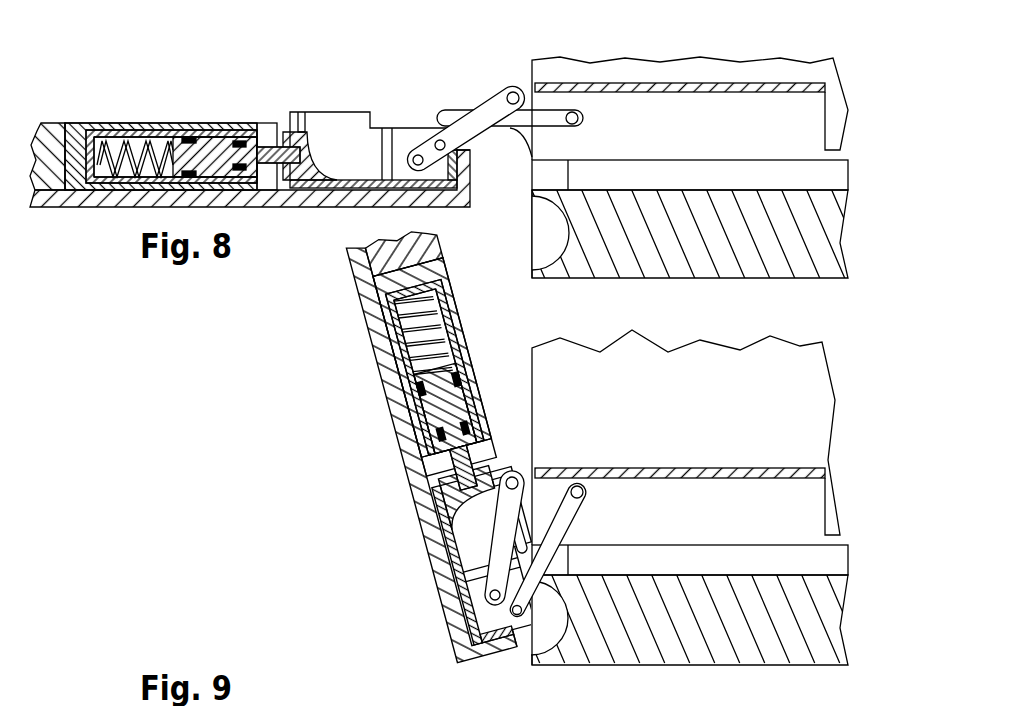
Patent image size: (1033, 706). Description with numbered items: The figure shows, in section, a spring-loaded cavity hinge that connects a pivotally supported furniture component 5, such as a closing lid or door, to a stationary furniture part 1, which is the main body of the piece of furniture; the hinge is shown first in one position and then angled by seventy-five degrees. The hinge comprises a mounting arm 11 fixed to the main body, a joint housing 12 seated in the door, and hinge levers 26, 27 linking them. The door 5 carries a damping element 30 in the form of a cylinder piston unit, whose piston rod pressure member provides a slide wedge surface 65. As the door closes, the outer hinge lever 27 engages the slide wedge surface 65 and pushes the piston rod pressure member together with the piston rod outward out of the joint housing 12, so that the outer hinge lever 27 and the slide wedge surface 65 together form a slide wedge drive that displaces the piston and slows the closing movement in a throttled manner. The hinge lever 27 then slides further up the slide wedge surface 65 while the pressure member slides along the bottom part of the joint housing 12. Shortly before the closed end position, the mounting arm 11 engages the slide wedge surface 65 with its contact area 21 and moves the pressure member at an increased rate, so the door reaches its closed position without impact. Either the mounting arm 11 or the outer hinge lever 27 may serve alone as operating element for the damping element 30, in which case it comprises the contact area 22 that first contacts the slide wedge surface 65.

In FIG. 8, the stationary furniture part 1 is at (740, 238).
In FIG. 8, the furniture component 5 is at (48, 137).
In FIG. 8, the mounting arm 11 is at (623, 122).
In FIG. 9, the mounting arm 11 is at (517, 510).
In FIG. 8, the joint housing 12 is at (376, 103).
In FIG. 8, the contact area 21 is at (513, 86).
In FIG. 9, the contact area 21 is at (505, 478).
In FIG. 8, the contact area 22 is at (465, 100).
In FIG. 9, the contact area 22 is at (482, 500).
In FIG. 8, the hinge lever 26 is at (495, 120).
In FIG. 9, the hinge lever 26 is at (548, 549).
In FIG. 8, the outer hinge lever 27 is at (455, 112).
In FIG. 9, the outer hinge lever 27 is at (492, 515).
In FIG. 8, the damping element 30 is at (158, 110).
In FIG. 8, the slide wedge surface 65 is at (343, 98).
In FIG. 9, the slide wedge surface 65 is at (470, 513).